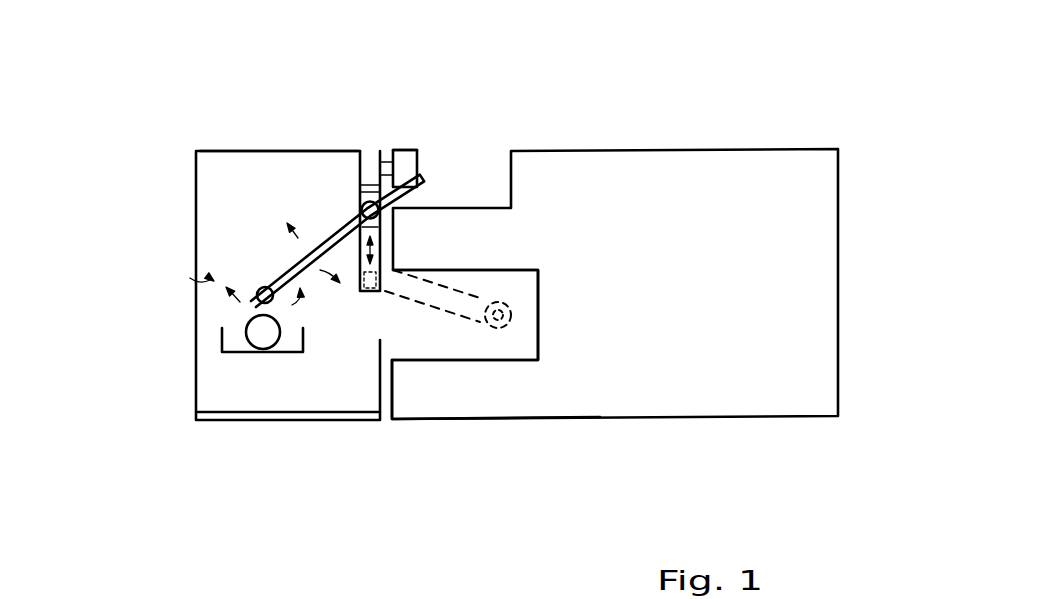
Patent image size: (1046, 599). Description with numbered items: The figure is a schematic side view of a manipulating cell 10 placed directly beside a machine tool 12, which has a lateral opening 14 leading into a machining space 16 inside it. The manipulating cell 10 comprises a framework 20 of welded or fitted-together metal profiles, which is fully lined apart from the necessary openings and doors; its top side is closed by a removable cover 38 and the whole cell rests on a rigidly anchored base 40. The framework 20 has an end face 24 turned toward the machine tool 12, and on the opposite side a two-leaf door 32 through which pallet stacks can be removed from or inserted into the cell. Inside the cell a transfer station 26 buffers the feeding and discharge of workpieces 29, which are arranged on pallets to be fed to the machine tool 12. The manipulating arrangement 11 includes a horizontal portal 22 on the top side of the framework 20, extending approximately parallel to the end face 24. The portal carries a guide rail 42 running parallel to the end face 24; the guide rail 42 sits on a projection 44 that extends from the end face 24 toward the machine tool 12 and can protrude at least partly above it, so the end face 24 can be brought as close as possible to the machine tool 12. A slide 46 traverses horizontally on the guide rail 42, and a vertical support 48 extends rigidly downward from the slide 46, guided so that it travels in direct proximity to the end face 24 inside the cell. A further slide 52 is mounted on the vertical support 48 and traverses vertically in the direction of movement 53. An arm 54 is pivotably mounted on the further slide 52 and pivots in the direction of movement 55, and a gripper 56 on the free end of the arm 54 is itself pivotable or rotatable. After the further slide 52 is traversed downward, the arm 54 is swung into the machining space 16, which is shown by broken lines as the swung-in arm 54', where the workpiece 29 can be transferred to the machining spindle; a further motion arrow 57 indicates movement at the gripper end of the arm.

The manipulating cell 10 is at (283, 117).
The manipulating arrangement 11 is at (319, 140).
The machine tool 12 is at (642, 96).
The lateral opening 14 is at (425, 342).
The machining space 16 is at (479, 358).
The framework 20 is at (209, 145).
The horizontal portal 22 is at (416, 145).
The end face 24 is at (390, 383).
The transfer station 26 is at (190, 278).
The workpiece 29 is at (263, 340).
The door 32 is at (192, 380).
The cover 38 is at (242, 150).
The base 40 is at (195, 417).
The guide rail 42 is at (416, 167).
The projection 44 is at (400, 192).
The slide 46 is at (383, 152).
The vertical support 48 is at (353, 275).
The further slide 52 is at (361, 160).
The direction of movement of the further slide 53 is at (383, 250).
The arm 54 is at (241, 202).
The arm in swung-in position 54' is at (538, 373).
The direction of movement of the arm 55 is at (298, 238).
The gripper 56 is at (250, 310).
The direction arrow 57 is at (240, 302).